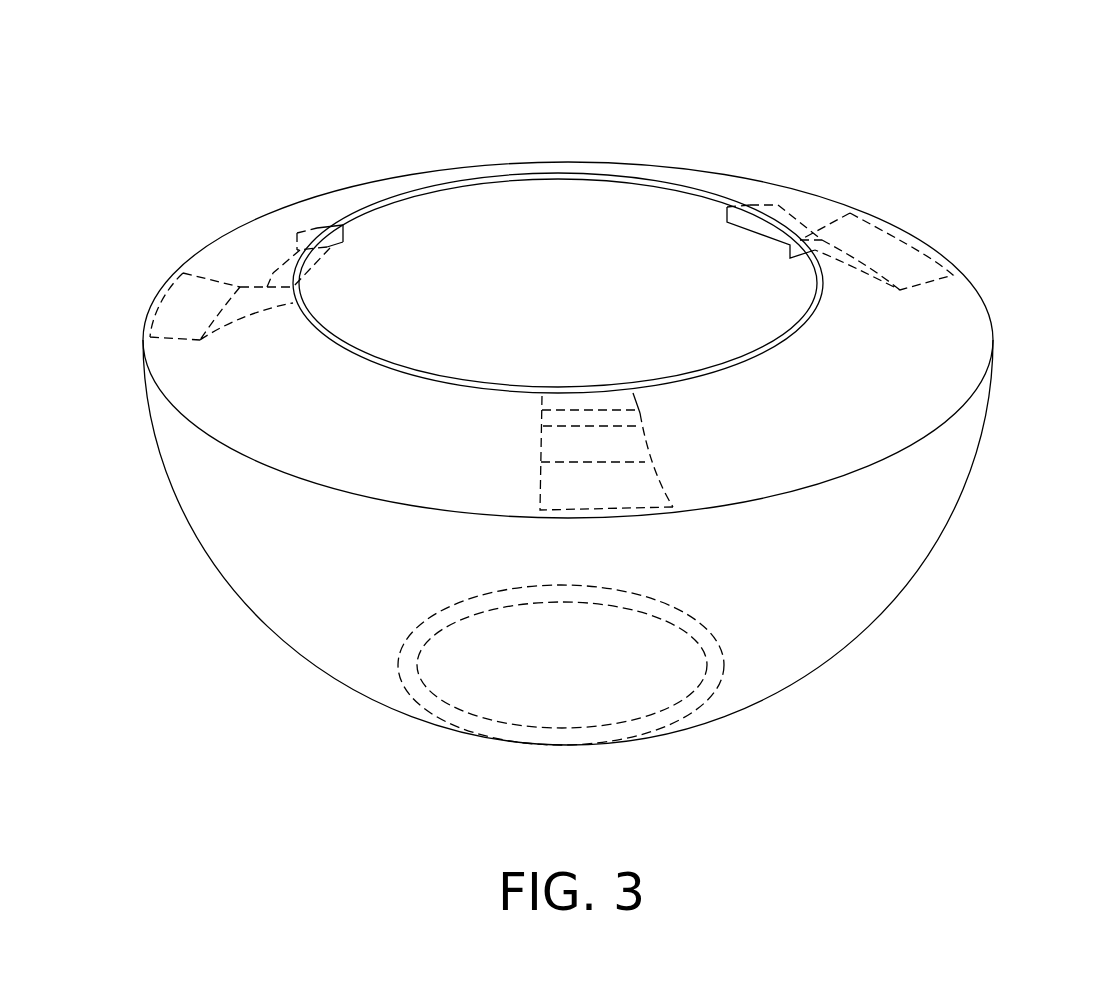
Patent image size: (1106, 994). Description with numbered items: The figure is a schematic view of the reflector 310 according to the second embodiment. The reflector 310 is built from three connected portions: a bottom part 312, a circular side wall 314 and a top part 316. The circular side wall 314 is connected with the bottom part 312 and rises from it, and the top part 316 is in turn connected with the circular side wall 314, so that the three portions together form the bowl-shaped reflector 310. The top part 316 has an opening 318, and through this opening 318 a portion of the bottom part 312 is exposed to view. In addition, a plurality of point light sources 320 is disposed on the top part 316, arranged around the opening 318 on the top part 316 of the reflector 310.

The reflector 310 is at (585, 441).
The bottom part 312 is at (555, 693).
The circular side wall 314 is at (277, 530).
The top part 316 is at (177, 383).
The opening 318 is at (452, 223).
The point light sources 320 is at (640, 410).